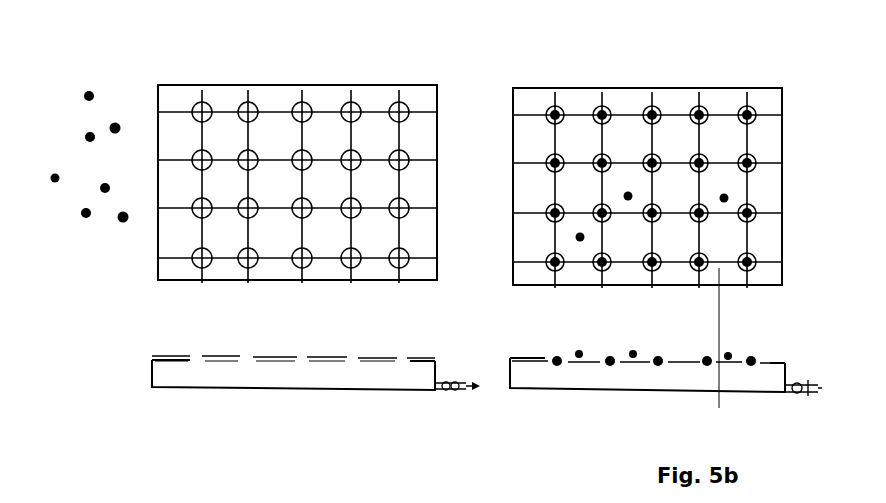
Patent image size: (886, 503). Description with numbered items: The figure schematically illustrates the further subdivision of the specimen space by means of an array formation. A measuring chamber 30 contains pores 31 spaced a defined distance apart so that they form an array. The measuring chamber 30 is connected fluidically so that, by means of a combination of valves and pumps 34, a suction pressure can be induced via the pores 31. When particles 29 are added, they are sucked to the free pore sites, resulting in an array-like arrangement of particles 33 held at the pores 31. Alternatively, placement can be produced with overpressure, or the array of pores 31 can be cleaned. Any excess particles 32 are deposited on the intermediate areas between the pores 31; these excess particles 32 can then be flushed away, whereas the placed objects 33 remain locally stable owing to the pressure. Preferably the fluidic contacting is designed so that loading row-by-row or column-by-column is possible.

The particles 29 is at (86, 96).
The measuring chamber 30 is at (380, 85).
The pores 31 is at (200, 108).
The excess particles 32 is at (727, 202).
The array-like arrangement of particles 33 is at (753, 115).
The combination of valves and pumps 34 is at (437, 392).